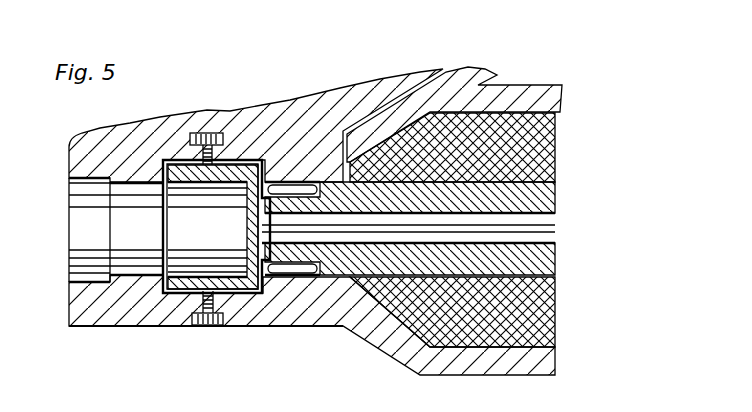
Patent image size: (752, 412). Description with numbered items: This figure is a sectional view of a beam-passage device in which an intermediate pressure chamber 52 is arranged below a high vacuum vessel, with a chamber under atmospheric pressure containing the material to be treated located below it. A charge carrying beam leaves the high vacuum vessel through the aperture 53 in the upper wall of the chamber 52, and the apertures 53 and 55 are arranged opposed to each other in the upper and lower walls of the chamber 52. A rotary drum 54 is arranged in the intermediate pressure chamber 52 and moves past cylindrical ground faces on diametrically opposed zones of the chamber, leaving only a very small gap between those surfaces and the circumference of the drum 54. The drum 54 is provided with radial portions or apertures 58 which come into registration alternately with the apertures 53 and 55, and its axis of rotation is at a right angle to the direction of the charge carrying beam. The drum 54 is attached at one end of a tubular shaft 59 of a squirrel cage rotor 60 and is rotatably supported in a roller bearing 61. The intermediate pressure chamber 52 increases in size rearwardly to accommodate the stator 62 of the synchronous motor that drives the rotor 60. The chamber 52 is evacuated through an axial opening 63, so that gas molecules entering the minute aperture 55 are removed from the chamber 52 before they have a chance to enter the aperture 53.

The intermediate pressure chamber 52 is at (95, 312).
The aperture 53 is at (209, 133).
The rotary drum 54 is at (231, 190).
The aperture 55 is at (207, 326).
The radial portions or apertures 58 is at (203, 273).
The tubular shaft 59 is at (537, 232).
The squirrel cage rotor 60 is at (540, 199).
The roller bearing 61 is at (288, 274).
The stator 62 is at (537, 315).
The axial opening 63 is at (82, 216).